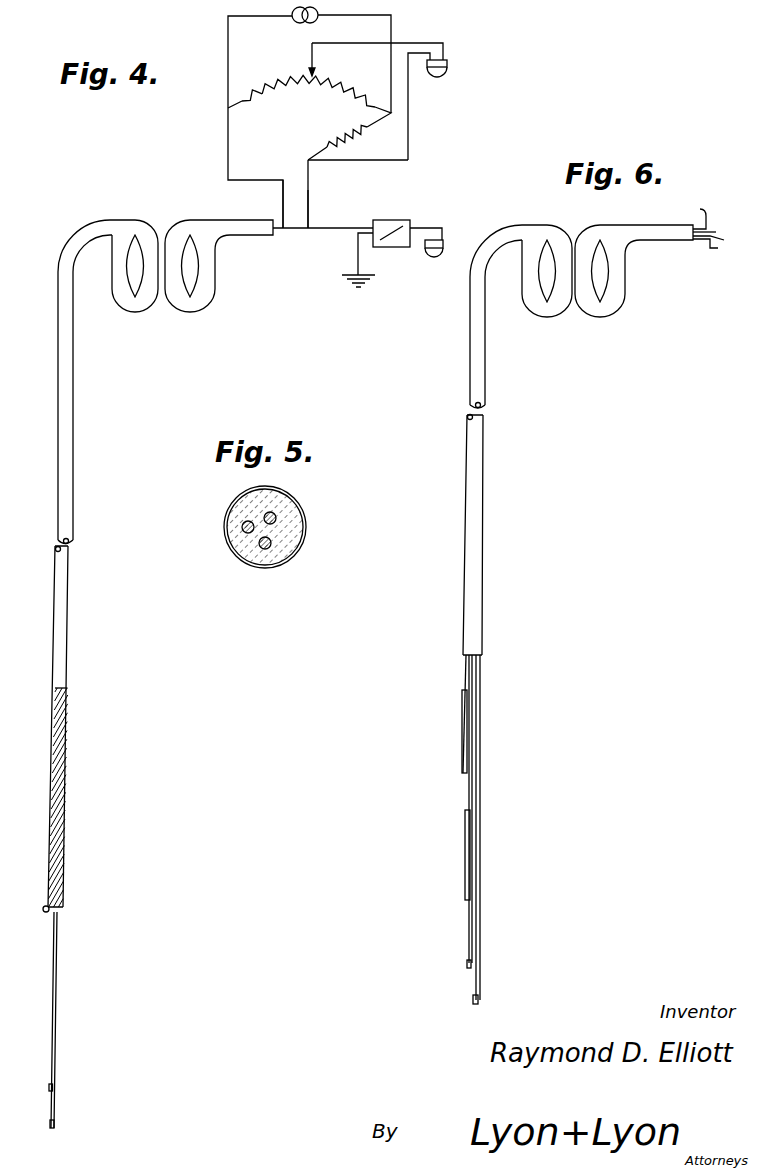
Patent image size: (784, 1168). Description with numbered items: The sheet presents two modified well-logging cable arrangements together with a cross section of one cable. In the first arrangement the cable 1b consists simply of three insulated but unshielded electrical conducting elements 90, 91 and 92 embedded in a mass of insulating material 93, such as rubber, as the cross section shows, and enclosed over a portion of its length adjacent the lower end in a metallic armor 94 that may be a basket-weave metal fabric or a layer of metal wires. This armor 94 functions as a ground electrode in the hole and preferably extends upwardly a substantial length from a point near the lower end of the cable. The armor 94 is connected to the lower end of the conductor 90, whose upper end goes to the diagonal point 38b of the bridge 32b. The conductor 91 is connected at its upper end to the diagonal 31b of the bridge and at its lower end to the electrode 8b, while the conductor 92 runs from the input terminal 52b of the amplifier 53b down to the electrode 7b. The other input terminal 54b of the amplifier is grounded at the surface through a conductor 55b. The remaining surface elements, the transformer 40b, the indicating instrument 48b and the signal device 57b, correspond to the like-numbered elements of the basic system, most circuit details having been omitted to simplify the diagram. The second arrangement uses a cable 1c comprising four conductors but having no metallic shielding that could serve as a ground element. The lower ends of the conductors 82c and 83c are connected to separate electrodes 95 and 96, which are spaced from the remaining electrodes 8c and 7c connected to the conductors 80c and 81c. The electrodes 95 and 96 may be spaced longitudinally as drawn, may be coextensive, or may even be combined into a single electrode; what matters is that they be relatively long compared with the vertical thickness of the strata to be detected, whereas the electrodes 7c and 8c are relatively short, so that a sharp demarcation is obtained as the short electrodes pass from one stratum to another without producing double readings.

In FIG. 4, the cable 1b is at (71, 496).
In FIG. 6, the cable 1c is at (478, 506).
In FIG. 4, the electrode 7b is at (49, 1088).
In FIG. 6, the electrode 7c is at (467, 963).
In FIG. 4, the electrode 8b is at (55, 1128).
In FIG. 6, the electrode 8c is at (473, 1000).
In FIG. 4, the bridge diagonal 31b is at (323, 137).
In FIG. 4, the bridge 32b is at (318, 92).
In FIG. 4, the bridge diagonal point 38b is at (226, 102).
In FIG. 4, the transformer 40b is at (314, 20).
In FIG. 4, the indicating instrument 48b is at (462, 54).
In FIG. 4, the input terminal 52b is at (367, 228).
In FIG. 4, the amplifier 53b is at (396, 232).
In FIG. 4, the input terminal 54b is at (366, 236).
In FIG. 4, the conductor 55b is at (355, 258).
In FIG. 4, the signal device 57b is at (446, 249).
In FIG. 6, the conductor 80c is at (716, 232).
In FIG. 6, the conductor 81c is at (724, 240).
In FIG. 6, the conductor 82c is at (440, 672).
In FIG. 6, the conductor 83c is at (480, 662).
In FIG. 4, the electrical conducting element 90 is at (274, 177).
In FIG. 5, the electrical conducting element 90 is at (276, 514).
In FIG. 4, the electrical conducting element 91 is at (308, 190).
In FIG. 5, the electrical conducting element 91 is at (266, 550).
In FIG. 4, the electrical conducting element 92 is at (350, 227).
In FIG. 5, the electrical conducting element 92 is at (242, 533).
In FIG. 5, the insulating material 93 is at (305, 498).
In FIG. 4, the metallic armor 94 is at (67, 407).
In FIG. 5, the metallic armor 94 is at (290, 548).
In FIG. 6, the electrode 95 is at (461, 728).
In FIG. 6, the electrode 96 is at (465, 836).